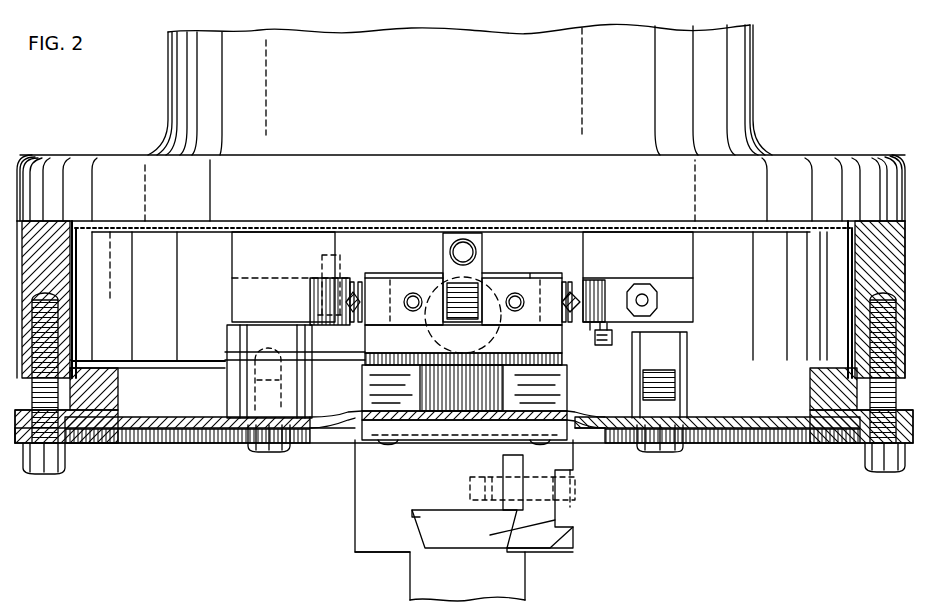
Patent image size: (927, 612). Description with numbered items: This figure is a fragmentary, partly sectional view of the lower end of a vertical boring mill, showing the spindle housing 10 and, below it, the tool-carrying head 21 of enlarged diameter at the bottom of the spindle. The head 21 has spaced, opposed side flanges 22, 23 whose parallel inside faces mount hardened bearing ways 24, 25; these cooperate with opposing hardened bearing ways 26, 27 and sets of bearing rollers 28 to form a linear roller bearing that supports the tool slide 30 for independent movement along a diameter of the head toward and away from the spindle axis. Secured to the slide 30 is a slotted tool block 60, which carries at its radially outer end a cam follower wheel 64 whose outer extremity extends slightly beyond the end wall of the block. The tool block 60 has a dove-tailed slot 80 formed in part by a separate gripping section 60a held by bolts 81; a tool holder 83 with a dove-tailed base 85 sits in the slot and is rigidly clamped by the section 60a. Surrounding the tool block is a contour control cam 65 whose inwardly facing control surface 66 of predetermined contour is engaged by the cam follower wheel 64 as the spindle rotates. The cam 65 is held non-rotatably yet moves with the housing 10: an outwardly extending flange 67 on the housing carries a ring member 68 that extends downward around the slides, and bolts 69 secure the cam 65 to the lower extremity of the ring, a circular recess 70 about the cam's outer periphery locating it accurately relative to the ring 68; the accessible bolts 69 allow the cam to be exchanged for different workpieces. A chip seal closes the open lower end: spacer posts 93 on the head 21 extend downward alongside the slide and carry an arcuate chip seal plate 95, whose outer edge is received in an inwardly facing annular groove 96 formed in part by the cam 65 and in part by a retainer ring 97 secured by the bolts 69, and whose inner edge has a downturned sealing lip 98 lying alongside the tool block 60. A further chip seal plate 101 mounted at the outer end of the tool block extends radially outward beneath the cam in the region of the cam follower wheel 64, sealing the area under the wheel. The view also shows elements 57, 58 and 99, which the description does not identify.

The spindle housing 10 is at (460, 87).
The tool-carrying head 21 is at (682, 262).
The side flange 22 is at (232, 278).
The side flange 23 is at (684, 305).
The hardened bearing way 24 is at (310, 283).
The hardened bearing way 25 is at (603, 292).
The hardened bearing way 26 is at (397, 273).
The hardened bearing way 27 is at (536, 273).
The bearing rollers 28 is at (353, 312).
The tool slide 30 is at (375, 352).
The center shaft 57 is at (452, 275).
The bearing ring 58 is at (470, 243).
The tool block 60 is at (557, 398).
The gripping section of tool block 60a is at (550, 540).
The cam follower wheel 64 is at (455, 435).
The contour control cam 65 is at (128, 368).
The control surface 66 is at (118, 390).
The flange 67 is at (85, 170).
The ring member 68 is at (70, 272).
The bolts 69 is at (60, 325).
The circular recess 70 is at (85, 365).
The dove-tailed slot 80 is at (443, 510).
The bolts 81 is at (576, 488).
The tool holder 83 is at (415, 578).
The dove-tailed base 85 is at (555, 536).
The spacer posts 93 is at (235, 385).
The chip seal plate 95 is at (728, 428).
The annular groove 96 is at (78, 444).
The retainer ring 97 is at (17, 446).
The sealing lip 98 is at (348, 440).
The nut 99 is at (585, 437).
The chip seal plate 101 is at (450, 434).